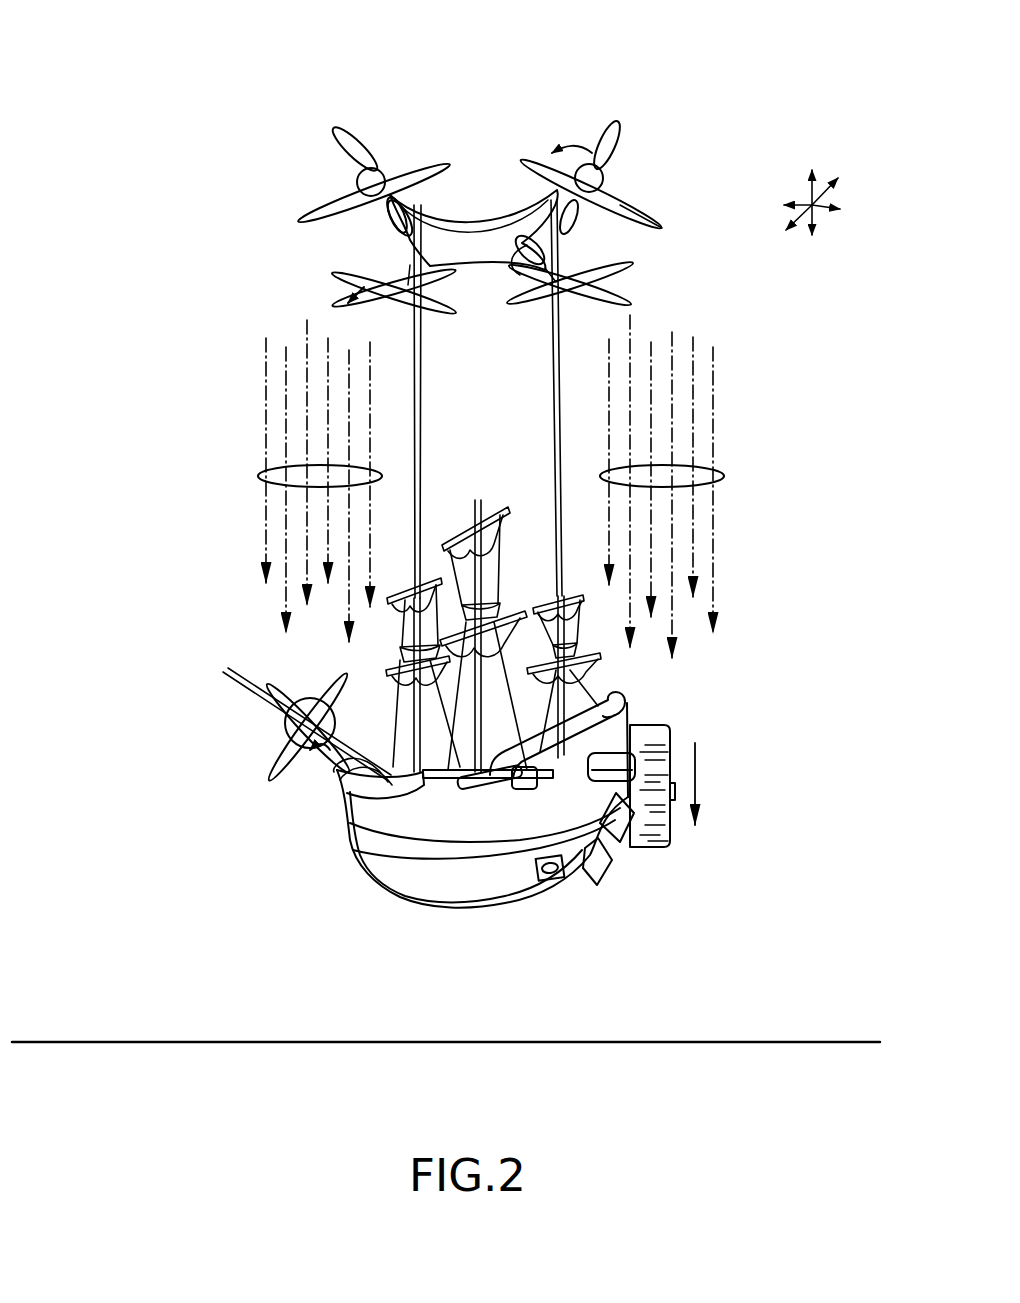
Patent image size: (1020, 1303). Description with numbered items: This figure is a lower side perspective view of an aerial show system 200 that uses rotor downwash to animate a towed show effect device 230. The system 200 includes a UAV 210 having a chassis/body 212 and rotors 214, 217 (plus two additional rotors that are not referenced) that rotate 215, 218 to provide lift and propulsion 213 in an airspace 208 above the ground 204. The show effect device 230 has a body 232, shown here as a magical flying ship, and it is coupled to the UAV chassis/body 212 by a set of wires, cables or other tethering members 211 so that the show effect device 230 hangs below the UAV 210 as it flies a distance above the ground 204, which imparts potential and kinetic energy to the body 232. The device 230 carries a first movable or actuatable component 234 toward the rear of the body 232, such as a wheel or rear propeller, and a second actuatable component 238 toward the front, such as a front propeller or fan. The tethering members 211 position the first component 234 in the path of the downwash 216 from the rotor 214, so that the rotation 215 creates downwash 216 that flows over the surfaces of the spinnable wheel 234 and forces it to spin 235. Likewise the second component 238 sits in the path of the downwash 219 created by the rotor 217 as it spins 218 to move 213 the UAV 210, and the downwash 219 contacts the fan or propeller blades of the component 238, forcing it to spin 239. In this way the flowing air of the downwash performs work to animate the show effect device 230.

The aerial show system 200 is at (723, 100).
The ground 204 is at (446, 1059).
The airspace 208 is at (123, 897).
The UAV 210 is at (333, 192).
The tethering members 211 is at (550, 446).
The chassis/body 212 is at (478, 188).
The lift and propulsion 213 is at (812, 207).
The rotor 214 is at (672, 230).
The rotation 215 is at (640, 200).
The downwash 216 is at (724, 476).
The rotor 217 is at (320, 287).
The rotation 218 is at (437, 315).
The downwash 219 is at (258, 475).
The show effect device 230 is at (379, 912).
The body 232 is at (463, 878).
The first actuatable component 234 is at (690, 730).
The spin 235 is at (697, 782).
The second actuatable component 238 is at (252, 732).
The spin 239 is at (335, 722).